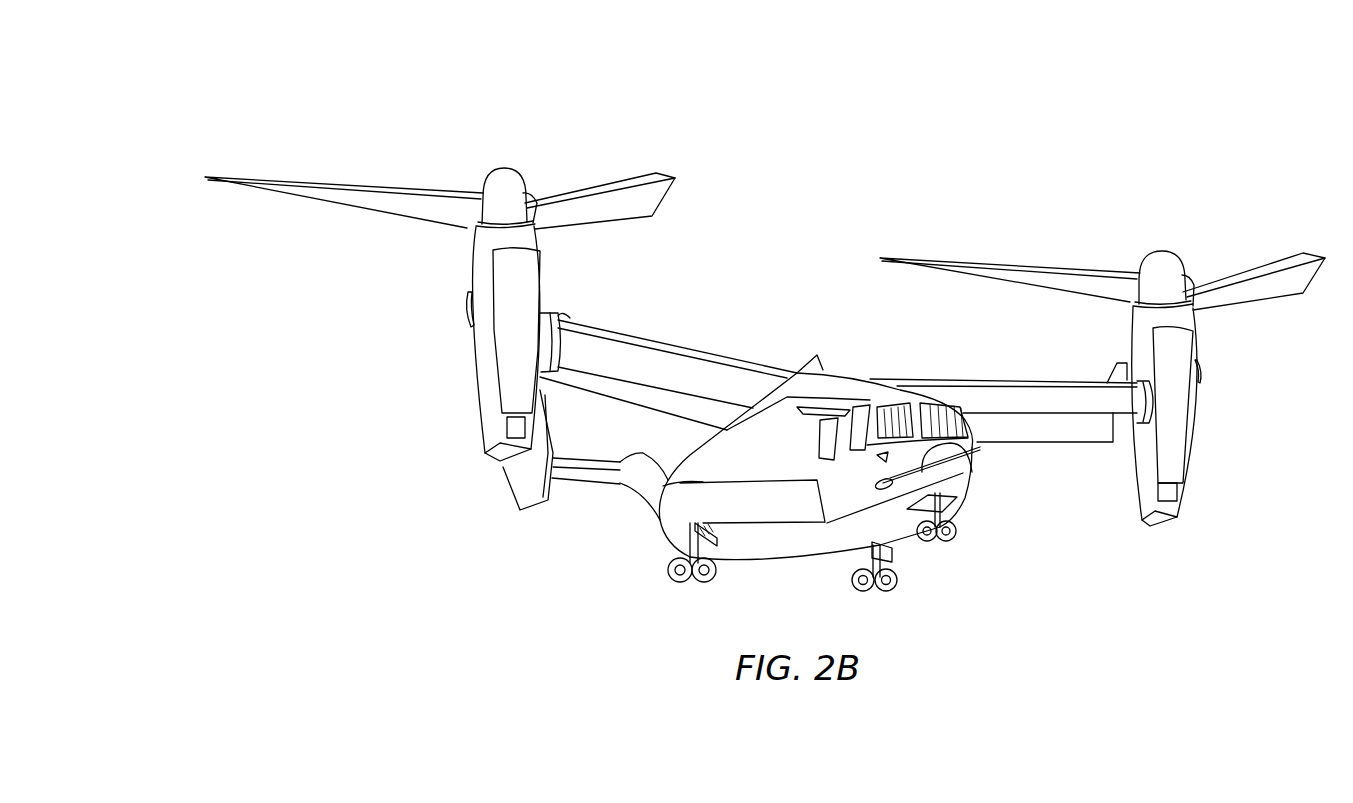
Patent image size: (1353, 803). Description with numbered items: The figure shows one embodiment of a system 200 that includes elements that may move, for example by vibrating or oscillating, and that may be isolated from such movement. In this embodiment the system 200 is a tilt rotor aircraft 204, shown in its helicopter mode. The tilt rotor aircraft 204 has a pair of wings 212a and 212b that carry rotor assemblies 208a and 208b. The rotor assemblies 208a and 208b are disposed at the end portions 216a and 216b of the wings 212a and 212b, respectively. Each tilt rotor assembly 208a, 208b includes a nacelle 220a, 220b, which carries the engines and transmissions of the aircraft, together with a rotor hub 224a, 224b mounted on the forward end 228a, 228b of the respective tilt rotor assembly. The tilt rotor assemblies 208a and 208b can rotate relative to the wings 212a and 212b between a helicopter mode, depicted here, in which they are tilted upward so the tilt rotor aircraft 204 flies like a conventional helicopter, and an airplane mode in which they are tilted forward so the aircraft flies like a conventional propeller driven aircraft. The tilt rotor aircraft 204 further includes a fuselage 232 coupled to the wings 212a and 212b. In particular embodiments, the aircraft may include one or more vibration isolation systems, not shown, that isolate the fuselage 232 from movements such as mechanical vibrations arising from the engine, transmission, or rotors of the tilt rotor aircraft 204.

The system 200 is at (984, 96).
The tilt rotor aircraft 204 is at (967, 521).
The rotor assembly 208a is at (1230, 435).
The rotor assembly 208b is at (436, 354).
The wing 212a is at (1003, 383).
The wing 212b is at (677, 343).
The end portion 216a is at (1116, 461).
The end portion 216b is at (562, 300).
The nacelle 220a is at (1183, 492).
The nacelle 220b is at (487, 448).
The rotor hub 224a is at (1182, 263).
The rotor hub 224b is at (495, 185).
The forward end 228a is at (1192, 318).
The forward end 228b is at (468, 236).
The fuselage 232 is at (787, 558).